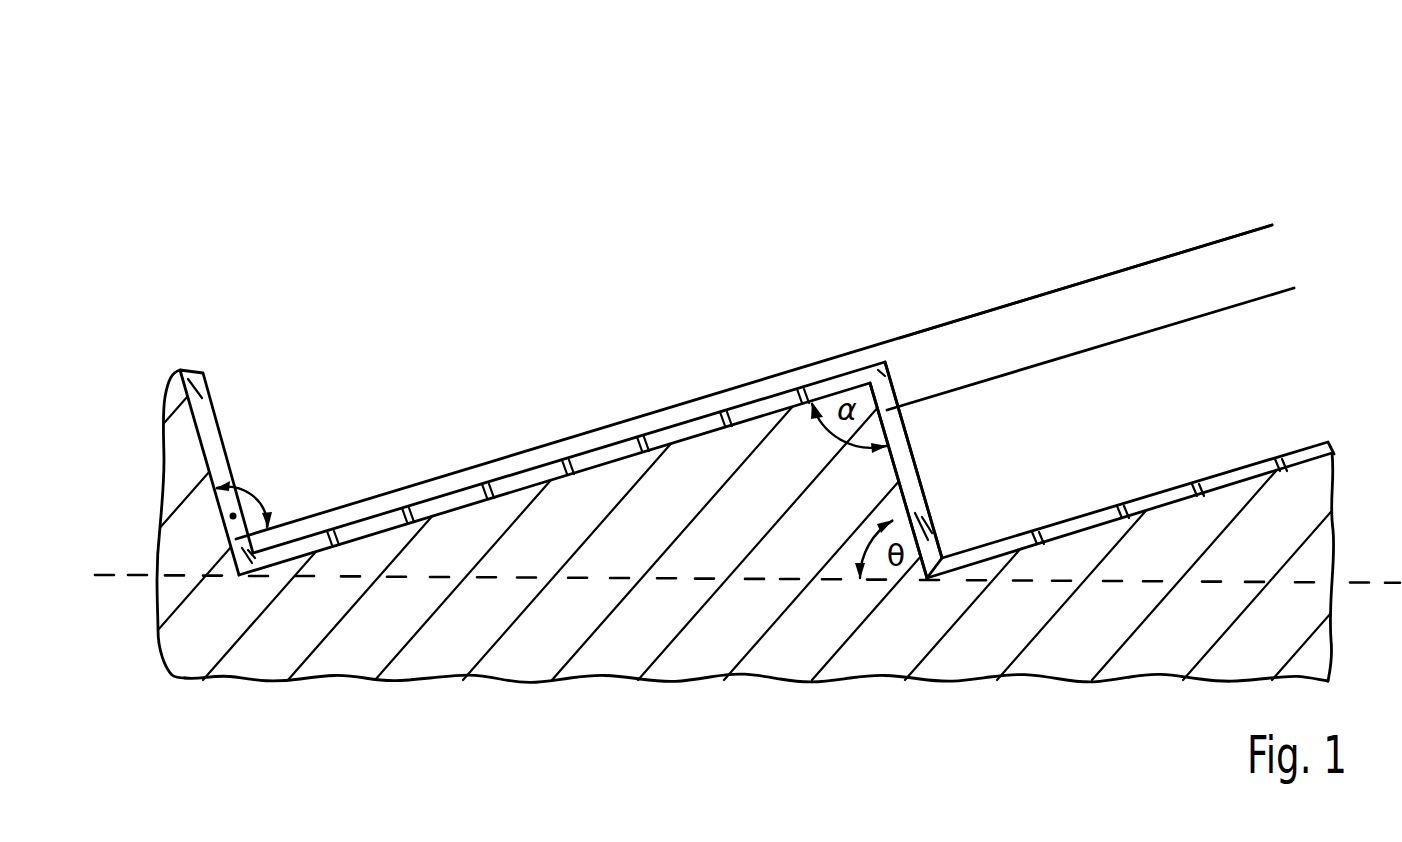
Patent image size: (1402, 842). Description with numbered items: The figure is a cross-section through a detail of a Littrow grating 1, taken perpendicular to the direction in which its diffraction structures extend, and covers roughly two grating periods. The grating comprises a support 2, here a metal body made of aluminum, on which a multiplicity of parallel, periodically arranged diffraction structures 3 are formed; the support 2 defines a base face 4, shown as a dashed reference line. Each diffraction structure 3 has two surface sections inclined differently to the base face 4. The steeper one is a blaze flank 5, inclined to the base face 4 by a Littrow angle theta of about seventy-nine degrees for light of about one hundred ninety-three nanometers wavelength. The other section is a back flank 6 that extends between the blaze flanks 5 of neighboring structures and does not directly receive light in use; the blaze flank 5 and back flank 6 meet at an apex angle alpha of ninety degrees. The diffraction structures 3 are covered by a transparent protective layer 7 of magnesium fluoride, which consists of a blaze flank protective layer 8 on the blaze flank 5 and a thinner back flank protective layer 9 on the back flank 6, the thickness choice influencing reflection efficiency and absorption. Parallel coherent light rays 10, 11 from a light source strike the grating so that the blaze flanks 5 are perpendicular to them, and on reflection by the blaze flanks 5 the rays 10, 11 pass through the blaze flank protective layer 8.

The Littrow grating 1 is at (899, 175).
The support 2 is at (702, 650).
The diffraction structures 3 is at (767, 417).
The base face 4 is at (1363, 581).
The blaze flank 5 is at (921, 513).
The back flank 6 is at (605, 460).
The protective layer 7 is at (687, 420).
The blaze flank protective layer 8 is at (918, 469).
The back flank protective layer 9 is at (508, 472).
The light ray 10 is at (1254, 231).
The light ray 11 is at (1272, 297).